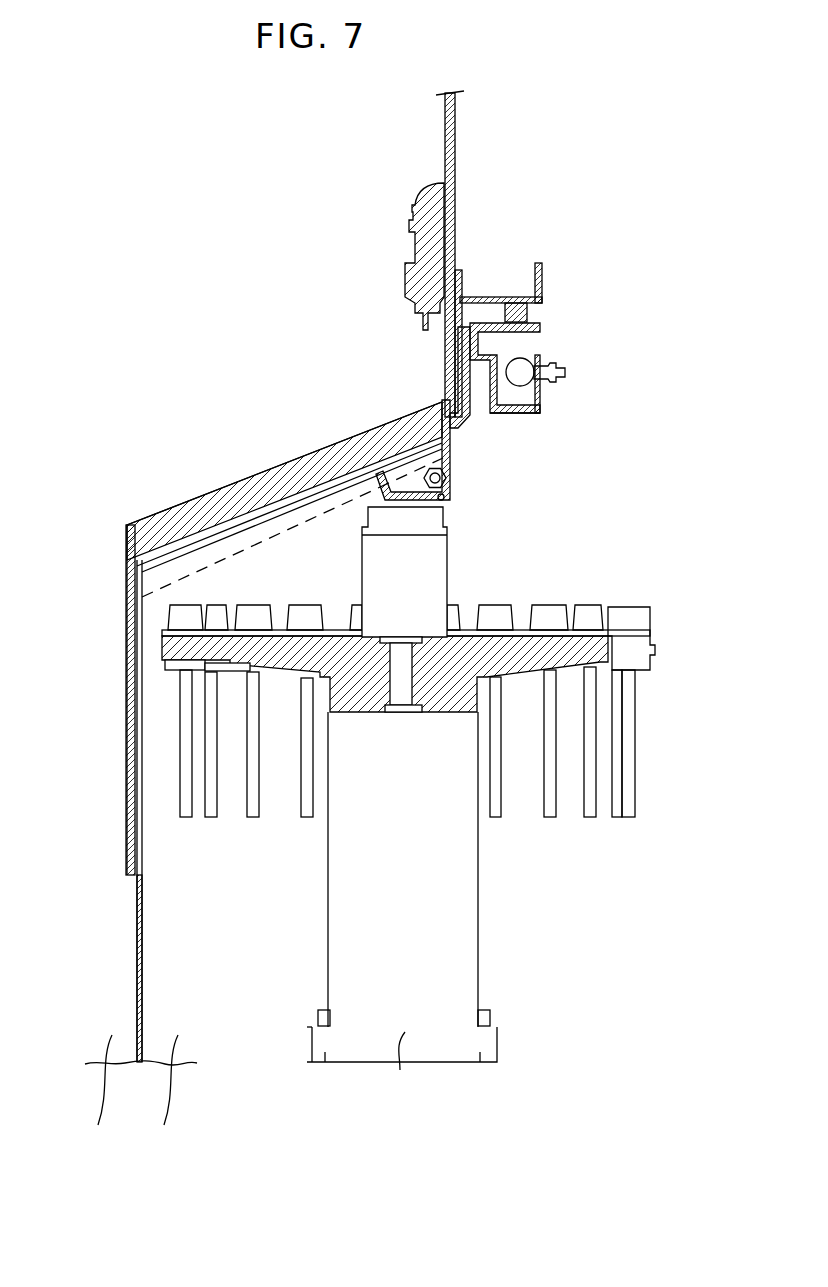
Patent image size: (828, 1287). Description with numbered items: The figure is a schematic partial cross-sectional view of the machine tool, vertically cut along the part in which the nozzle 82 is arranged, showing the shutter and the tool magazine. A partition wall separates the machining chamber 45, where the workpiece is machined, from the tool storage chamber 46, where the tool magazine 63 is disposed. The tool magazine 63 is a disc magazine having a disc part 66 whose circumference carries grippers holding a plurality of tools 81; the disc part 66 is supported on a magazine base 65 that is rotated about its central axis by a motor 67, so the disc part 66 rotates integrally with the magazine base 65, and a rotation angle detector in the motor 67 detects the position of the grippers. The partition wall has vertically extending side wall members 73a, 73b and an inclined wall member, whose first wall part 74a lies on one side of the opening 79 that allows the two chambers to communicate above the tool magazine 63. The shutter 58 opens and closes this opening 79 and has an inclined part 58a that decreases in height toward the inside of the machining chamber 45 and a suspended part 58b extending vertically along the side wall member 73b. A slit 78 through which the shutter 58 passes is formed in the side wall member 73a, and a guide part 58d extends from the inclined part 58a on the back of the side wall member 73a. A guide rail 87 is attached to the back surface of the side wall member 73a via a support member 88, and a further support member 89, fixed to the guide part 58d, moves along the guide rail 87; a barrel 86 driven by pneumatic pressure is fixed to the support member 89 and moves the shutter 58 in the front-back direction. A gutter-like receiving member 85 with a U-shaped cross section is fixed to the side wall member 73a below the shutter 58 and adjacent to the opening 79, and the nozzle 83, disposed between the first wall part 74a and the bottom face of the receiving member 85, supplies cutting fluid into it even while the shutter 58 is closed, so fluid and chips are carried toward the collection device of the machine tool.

The machining chamber 45 is at (139, 1097).
The tool storage chamber 46 is at (162, 1097).
The shutter 58 is at (127, 580).
The inclined part 58a is at (157, 515).
The suspended part 58b is at (126, 722).
The guide part 58d is at (462, 374).
The tool magazine 63 is at (403, 1032).
The magazine base 65 is at (455, 918).
The disc part 66 is at (556, 630).
The motor 67 is at (428, 570).
The side wall member 73a is at (445, 128).
The side wall member 73b is at (135, 967).
The first wall part 74a is at (205, 535).
The slit 78 is at (460, 425).
The opening 79 is at (283, 497).
The tools 81 is at (628, 742).
The nozzle 82 is at (410, 238).
The nozzle 83 is at (448, 470).
The receiving member 85 is at (444, 498).
The barrel 86 is at (540, 340).
The guide rail 87 is at (527, 312).
The support member 88 is at (480, 297).
The support member 89 is at (540, 413).